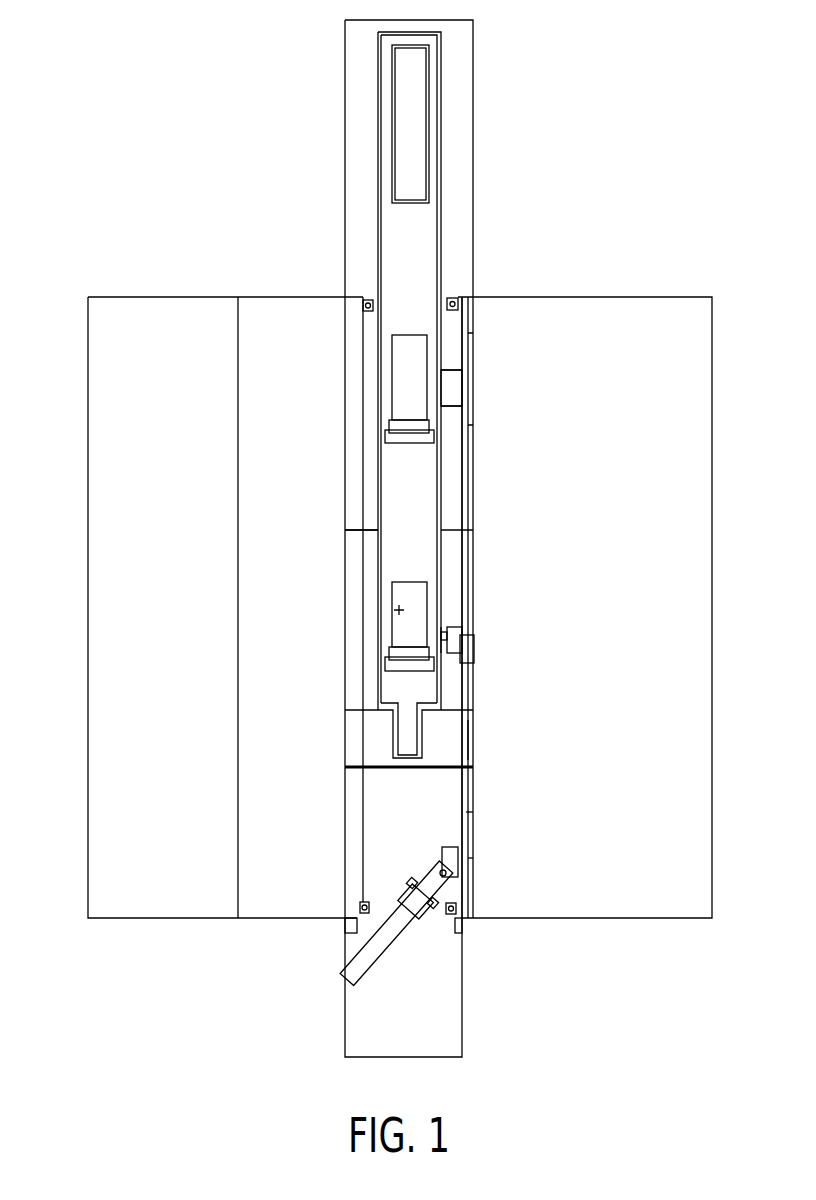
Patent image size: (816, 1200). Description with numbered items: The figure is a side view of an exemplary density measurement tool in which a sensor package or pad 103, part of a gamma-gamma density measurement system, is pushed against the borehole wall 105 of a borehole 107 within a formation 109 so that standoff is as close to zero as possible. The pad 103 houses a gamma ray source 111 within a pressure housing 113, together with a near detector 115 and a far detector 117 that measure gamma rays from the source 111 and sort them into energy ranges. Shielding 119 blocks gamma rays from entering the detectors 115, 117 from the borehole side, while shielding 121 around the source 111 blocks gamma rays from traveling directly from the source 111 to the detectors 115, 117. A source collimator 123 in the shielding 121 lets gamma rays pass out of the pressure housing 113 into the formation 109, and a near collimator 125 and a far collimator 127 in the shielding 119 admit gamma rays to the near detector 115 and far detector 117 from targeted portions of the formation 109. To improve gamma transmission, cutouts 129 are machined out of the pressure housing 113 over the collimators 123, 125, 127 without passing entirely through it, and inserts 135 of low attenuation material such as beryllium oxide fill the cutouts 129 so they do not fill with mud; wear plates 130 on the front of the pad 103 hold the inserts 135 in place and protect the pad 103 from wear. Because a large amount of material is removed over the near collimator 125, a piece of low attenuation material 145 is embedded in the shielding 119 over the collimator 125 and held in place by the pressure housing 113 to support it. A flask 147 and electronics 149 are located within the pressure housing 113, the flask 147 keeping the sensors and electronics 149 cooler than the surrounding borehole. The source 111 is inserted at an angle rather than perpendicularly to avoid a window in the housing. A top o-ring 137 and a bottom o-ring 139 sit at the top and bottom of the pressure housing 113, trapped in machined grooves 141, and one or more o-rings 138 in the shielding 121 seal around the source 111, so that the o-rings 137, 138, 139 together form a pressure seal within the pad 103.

The sensor package or pad 103 is at (222, 120).
The borehole wall 105 is at (238, 388).
The borehole 107 is at (253, 445).
The formation 109 is at (110, 483).
The gamma ray source 111 is at (453, 873).
The pressure housing 113 is at (355, 790).
The near detector 115 is at (398, 598).
The far detector 117 is at (405, 368).
The shielding 119 is at (368, 552).
The shielding 121 is at (372, 835).
The source collimator 123 is at (453, 858).
The near collimator 125 is at (443, 645).
The far collimator 127 is at (448, 390).
The cutouts 129 is at (466, 368).
The wear plates 130 is at (468, 740).
The inserts 135 is at (470, 400).
The top o-ring 137 is at (460, 301).
The o-rings 138 is at (422, 907).
The bottom o-ring 139 is at (358, 913).
The grooves 141 is at (455, 303).
The low attenuation material 145 is at (447, 630).
The flask 147 is at (443, 478).
The electronics 149 is at (418, 93).